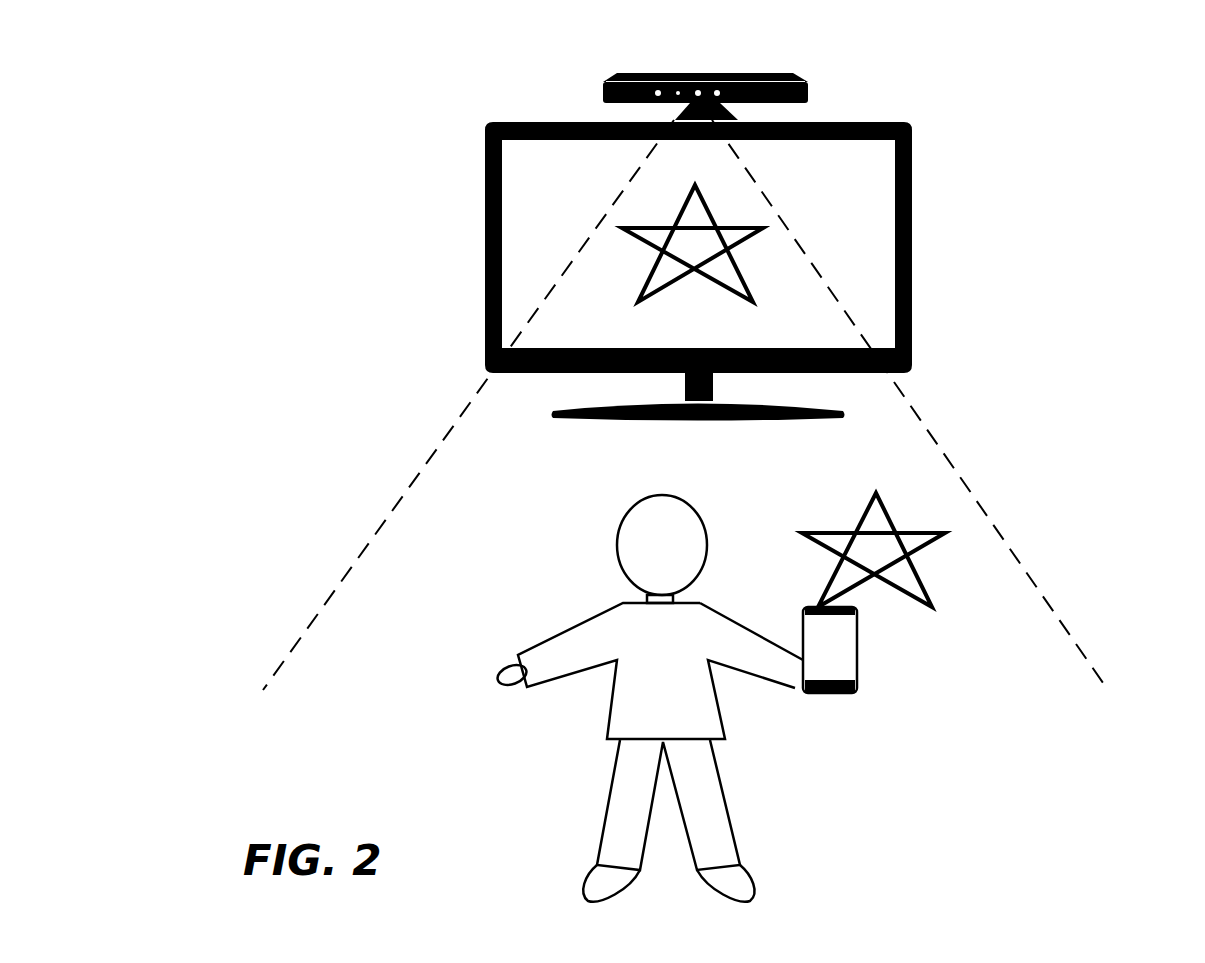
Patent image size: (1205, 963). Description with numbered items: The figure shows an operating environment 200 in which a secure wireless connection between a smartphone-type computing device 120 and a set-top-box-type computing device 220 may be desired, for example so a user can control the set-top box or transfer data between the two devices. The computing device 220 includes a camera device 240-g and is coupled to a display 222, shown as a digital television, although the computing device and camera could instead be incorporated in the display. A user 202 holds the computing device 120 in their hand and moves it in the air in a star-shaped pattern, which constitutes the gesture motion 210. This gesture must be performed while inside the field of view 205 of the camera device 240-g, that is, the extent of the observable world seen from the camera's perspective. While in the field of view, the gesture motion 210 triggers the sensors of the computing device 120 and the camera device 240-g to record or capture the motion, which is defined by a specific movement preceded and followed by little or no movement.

The operating environment 200 is at (1198, 125).
The user 202 is at (553, 622).
The field of view 205 is at (380, 527).
The gesture motion 210 is at (763, 227).
The computing device 220 is at (761, 74).
The display 222 is at (912, 282).
The camera device 240-g is at (707, 73).
The computing device 120 is at (857, 693).